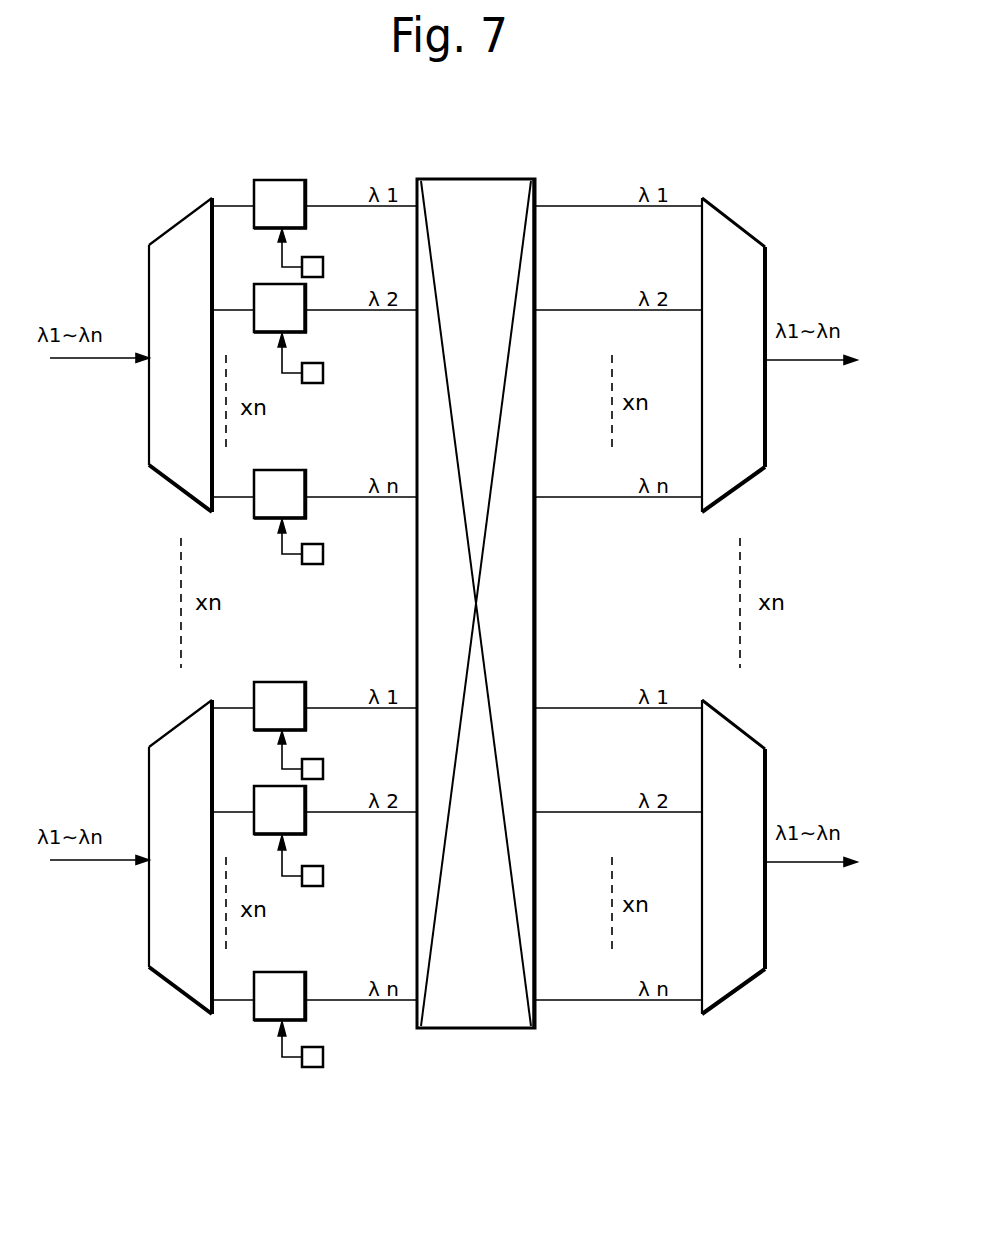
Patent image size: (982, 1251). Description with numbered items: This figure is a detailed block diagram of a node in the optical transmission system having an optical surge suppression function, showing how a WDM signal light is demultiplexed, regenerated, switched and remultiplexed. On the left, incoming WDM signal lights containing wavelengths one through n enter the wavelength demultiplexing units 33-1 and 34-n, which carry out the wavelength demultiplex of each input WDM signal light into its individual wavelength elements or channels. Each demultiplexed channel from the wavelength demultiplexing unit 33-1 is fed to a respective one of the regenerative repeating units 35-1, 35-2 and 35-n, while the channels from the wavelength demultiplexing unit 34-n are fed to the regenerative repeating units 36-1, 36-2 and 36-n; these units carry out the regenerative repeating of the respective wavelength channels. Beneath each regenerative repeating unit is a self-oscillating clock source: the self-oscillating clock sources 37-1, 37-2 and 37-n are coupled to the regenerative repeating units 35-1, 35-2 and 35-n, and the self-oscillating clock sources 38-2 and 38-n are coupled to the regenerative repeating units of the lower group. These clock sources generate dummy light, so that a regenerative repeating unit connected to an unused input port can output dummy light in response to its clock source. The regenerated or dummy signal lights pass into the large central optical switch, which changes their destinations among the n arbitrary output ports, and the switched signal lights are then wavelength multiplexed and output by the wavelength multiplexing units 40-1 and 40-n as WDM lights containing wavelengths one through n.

The wavelength demultiplexing unit 33-1 is at (149, 270).
The wavelength demultiplexing unit 34-n is at (149, 772).
The regenerative repeating unit 35-1 is at (281, 180).
The regenerative repeating unit 35-2 is at (259, 284).
The regenerative repeating unit 35-n is at (283, 470).
The regenerative repeating unit 36-1 is at (281, 682).
The regenerative repeating unit 36-2 is at (259, 786).
The regenerative repeating unit 36-n is at (283, 972).
The self-oscillating clock source 37-1 is at (324, 267).
The self-oscillating clock source 37-2 is at (324, 373).
The self-oscillating clock source 37-n is at (324, 554).
The self-oscillating clock source 38-2 is at (324, 876).
The self-oscillating clock source 38-n is at (324, 769).
The wavelength multiplexing unit 40-1 is at (767, 268).
The wavelength multiplexing unit 40-n is at (767, 770).